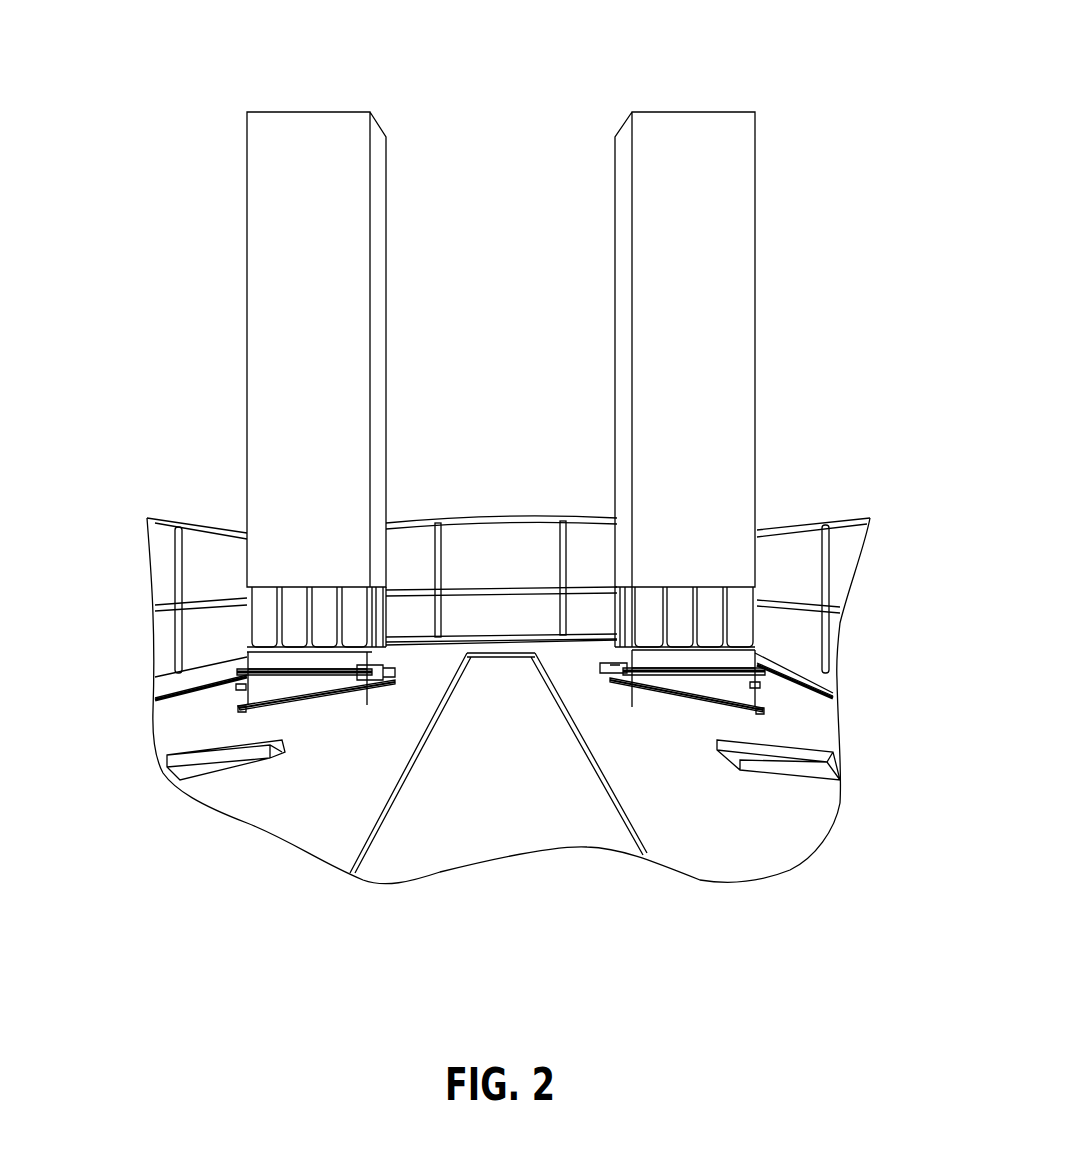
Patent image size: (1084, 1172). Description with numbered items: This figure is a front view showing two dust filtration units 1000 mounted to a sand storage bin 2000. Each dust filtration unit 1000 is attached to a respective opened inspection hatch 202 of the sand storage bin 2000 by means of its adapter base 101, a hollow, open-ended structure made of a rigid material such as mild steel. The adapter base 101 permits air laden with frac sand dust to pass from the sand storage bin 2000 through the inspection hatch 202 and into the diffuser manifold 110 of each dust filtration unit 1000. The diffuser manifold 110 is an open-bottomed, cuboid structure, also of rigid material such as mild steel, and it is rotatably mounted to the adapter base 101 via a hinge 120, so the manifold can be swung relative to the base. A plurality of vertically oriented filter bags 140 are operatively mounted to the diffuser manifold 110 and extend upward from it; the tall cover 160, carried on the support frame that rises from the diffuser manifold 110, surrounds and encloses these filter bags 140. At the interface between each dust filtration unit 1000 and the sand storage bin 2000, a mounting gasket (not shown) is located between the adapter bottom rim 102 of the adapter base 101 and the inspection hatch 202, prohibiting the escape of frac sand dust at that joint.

The dust filtration unit 1000 is at (498, 402).
The sand storage bin 2000 is at (730, 850).
The cover 160 is at (345, 188).
The filter bags 140 is at (643, 598).
The diffuser manifold 110 is at (620, 653).
The hinge 120 is at (383, 683).
The inspection hatch 202 is at (313, 700).
The adapter base 101 is at (245, 687).
The adapter bottom rim 102 is at (240, 711).